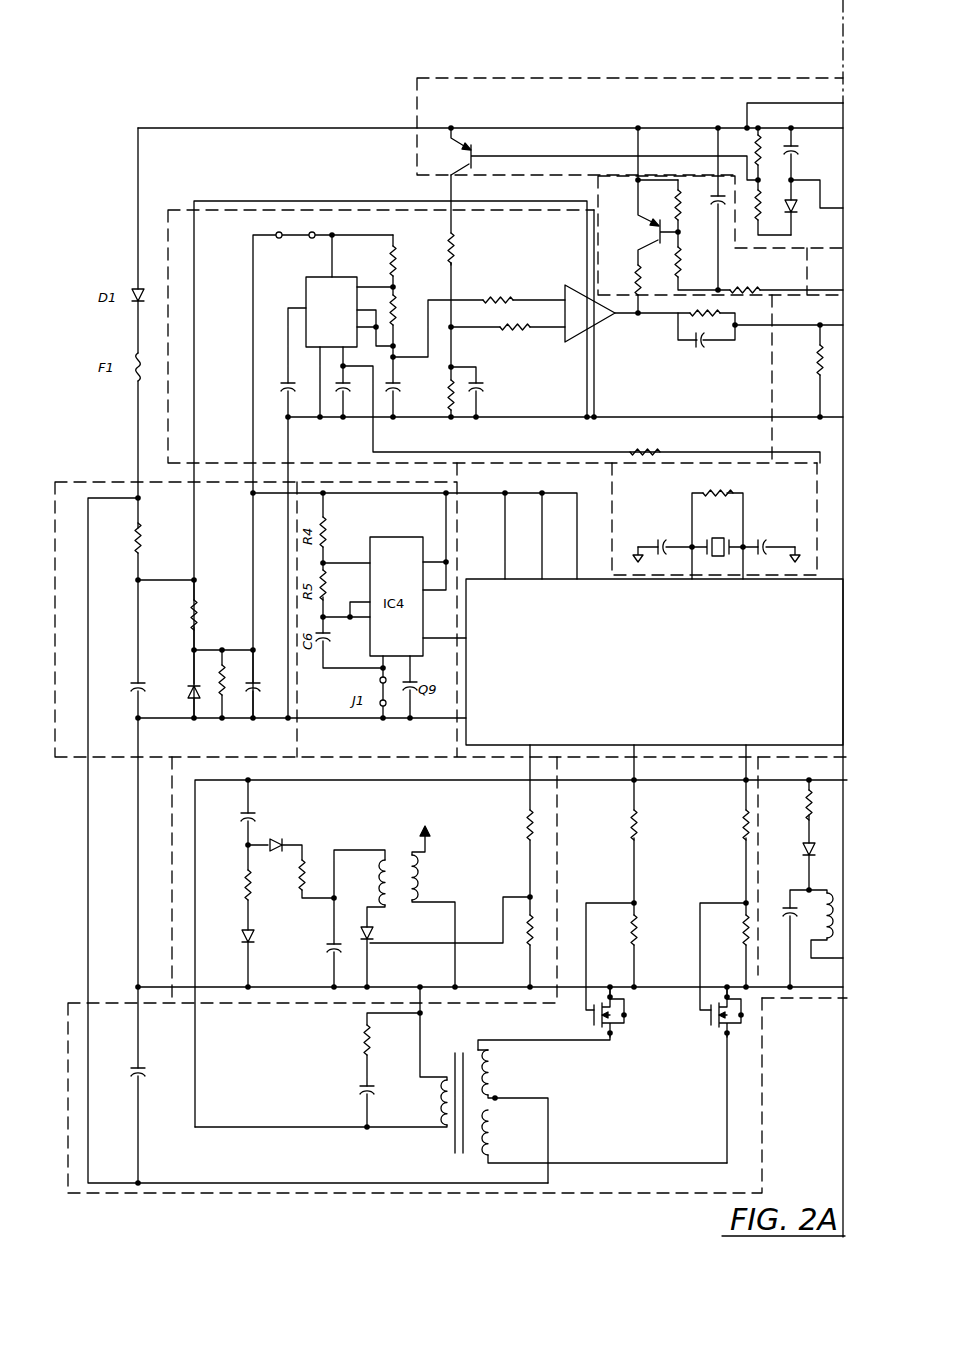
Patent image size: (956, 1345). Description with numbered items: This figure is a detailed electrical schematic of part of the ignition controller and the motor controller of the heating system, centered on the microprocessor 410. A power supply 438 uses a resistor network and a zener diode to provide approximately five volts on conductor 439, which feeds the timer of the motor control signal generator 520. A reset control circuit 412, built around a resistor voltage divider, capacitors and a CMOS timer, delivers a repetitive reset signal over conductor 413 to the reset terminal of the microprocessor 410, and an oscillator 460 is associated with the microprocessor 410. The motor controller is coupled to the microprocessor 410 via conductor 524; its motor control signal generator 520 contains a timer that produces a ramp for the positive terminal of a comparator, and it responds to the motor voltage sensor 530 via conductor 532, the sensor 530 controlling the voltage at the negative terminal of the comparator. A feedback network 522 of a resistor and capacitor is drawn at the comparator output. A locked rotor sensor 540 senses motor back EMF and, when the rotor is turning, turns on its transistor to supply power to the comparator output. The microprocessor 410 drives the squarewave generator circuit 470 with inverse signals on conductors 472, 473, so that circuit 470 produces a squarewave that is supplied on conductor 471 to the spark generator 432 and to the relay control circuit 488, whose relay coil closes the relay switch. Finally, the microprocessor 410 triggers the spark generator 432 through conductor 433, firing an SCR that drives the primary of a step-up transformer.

The motor voltage sensor 530 is at (738, 77).
The motor control signal generator 520 is at (168, 210).
The locked rotor sensor 540 is at (598, 188).
The conductor 532 is at (457, 234).
The feedback network R20/C9 522 is at (757, 330).
The conductor 524 is at (836, 438).
The power supply 438 is at (72, 466).
The reset control circuit 412 is at (448, 486).
The oscillator 460 is at (606, 490).
The conductor 439 is at (253, 546).
The conductor 413 is at (450, 646).
The microprocessor 410 is at (672, 668).
The spark generator 432 is at (168, 804).
The conductor 433 is at (528, 772).
The conductor 472 is at (633, 766).
The conductor 473 is at (742, 766).
The relay control circuit 488 is at (818, 1002).
The squarewave generator circuit 470 is at (764, 1106).
The conductor 471 is at (254, 1128).